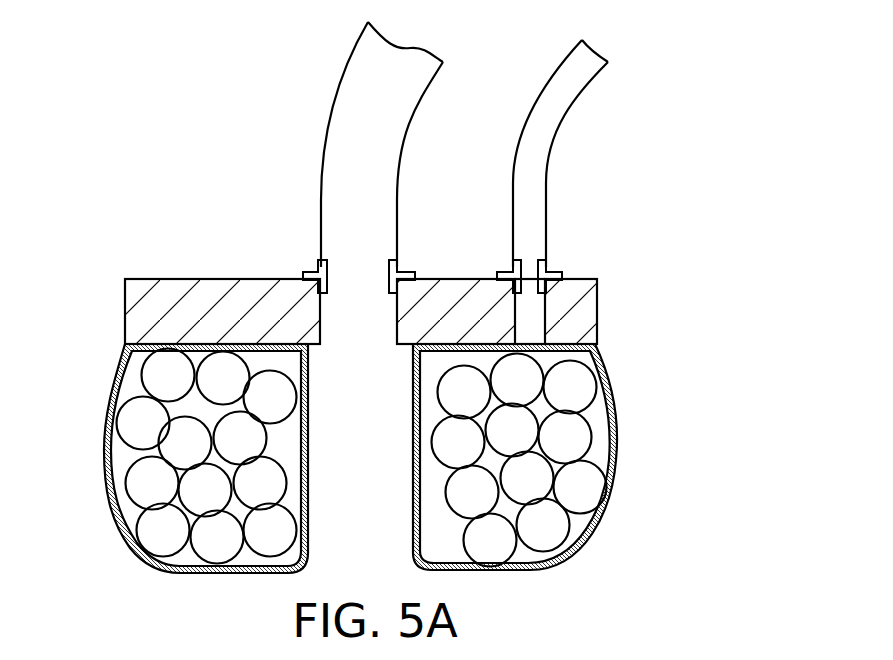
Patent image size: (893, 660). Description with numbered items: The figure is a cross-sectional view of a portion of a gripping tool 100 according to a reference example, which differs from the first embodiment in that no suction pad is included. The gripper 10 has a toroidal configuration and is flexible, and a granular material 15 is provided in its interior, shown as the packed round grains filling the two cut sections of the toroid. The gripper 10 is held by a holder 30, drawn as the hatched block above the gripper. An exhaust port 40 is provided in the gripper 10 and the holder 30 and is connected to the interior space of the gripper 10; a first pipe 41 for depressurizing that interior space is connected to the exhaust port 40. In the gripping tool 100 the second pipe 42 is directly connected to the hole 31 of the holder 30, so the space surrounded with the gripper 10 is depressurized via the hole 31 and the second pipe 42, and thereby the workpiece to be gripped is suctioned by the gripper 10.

The gripping tool 100 is at (672, 110).
The gripper 10 is at (125, 537).
The granular material 15 is at (140, 483).
The holder 30 is at (133, 308).
The hole 31 is at (315, 303).
The exhaust port 40 is at (530, 313).
The first pipe 41 is at (562, 80).
The second pipe 42 is at (362, 75).